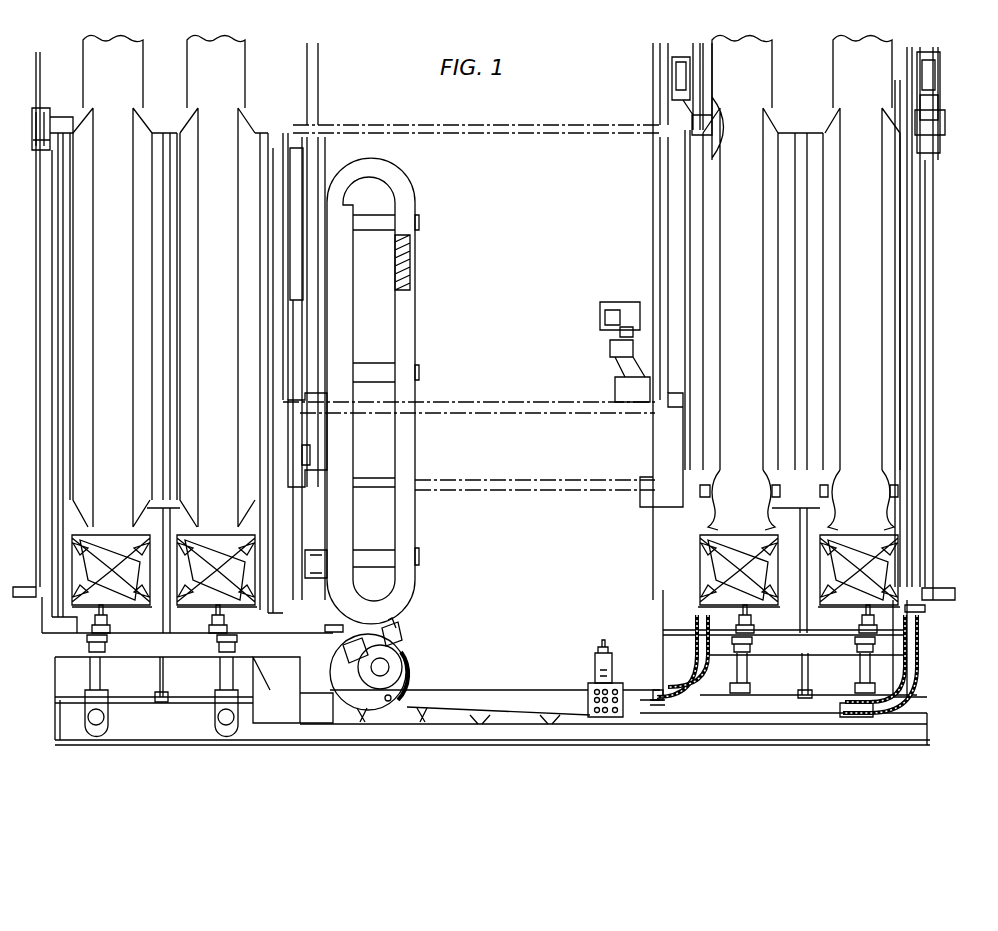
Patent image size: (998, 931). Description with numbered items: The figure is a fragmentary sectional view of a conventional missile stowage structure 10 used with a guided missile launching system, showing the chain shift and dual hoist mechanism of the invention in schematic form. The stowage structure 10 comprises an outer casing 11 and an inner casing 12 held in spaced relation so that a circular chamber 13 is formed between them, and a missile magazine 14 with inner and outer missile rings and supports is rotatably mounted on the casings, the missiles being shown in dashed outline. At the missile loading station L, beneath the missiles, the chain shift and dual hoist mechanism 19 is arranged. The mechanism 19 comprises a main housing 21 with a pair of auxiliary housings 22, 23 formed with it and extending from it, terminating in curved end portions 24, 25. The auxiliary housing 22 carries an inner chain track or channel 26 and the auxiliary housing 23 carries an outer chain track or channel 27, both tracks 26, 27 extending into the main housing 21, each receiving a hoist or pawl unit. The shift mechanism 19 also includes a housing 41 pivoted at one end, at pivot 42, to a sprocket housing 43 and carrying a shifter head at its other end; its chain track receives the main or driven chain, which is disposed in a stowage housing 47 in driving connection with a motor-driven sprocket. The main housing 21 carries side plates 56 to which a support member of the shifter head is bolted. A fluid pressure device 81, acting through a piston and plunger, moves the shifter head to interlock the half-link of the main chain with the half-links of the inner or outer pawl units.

The missile stowage structure 10 is at (952, 311).
The outer casing 11 is at (935, 437).
The inner casing 12 is at (653, 222).
The circular chamber 13 is at (910, 378).
The missile magazine 14 is at (907, 238).
The chain shift and dual hoist mechanism 19 is at (534, 669).
The main housing 21 is at (630, 693).
The auxiliary housing 22 is at (675, 700).
The auxiliary housing 23 is at (783, 705).
The curved end portion 24 is at (695, 622).
The curved end portion 25 is at (920, 640).
The inner chain track 26 is at (693, 668).
The outer chain track 27 is at (920, 670).
The housing 41 is at (483, 692).
The pivot 42 is at (388, 702).
The sprocket housing 43 is at (360, 673).
The stowage housing 47 is at (403, 527).
The side plate 56 is at (613, 717).
The fluid pressure device 81 is at (595, 660).
The missile loading station L is at (925, 610).